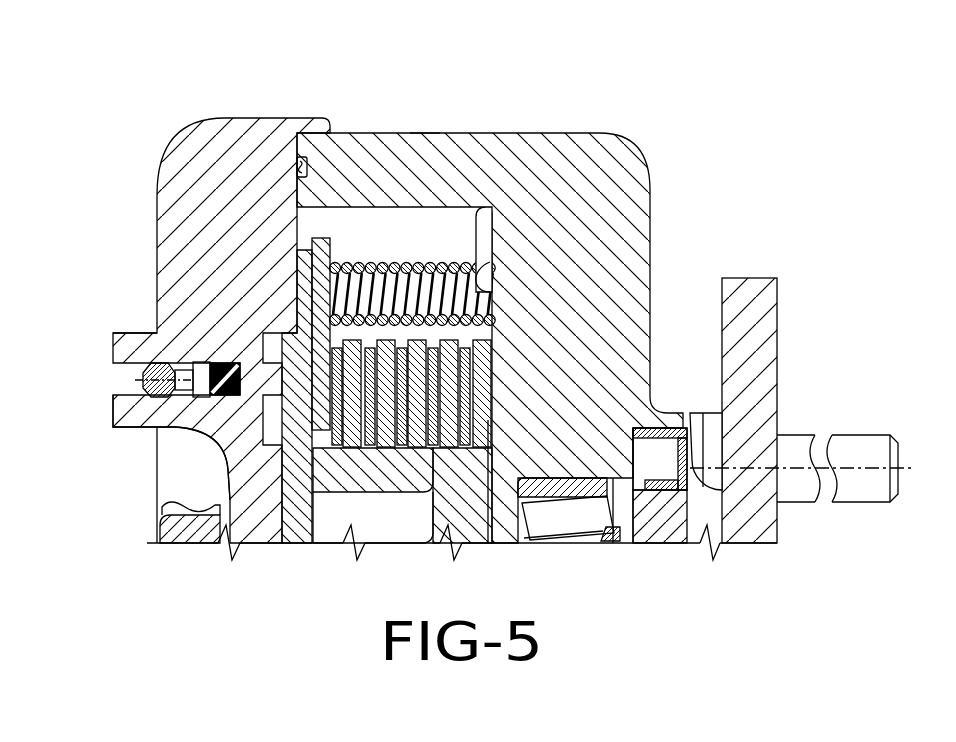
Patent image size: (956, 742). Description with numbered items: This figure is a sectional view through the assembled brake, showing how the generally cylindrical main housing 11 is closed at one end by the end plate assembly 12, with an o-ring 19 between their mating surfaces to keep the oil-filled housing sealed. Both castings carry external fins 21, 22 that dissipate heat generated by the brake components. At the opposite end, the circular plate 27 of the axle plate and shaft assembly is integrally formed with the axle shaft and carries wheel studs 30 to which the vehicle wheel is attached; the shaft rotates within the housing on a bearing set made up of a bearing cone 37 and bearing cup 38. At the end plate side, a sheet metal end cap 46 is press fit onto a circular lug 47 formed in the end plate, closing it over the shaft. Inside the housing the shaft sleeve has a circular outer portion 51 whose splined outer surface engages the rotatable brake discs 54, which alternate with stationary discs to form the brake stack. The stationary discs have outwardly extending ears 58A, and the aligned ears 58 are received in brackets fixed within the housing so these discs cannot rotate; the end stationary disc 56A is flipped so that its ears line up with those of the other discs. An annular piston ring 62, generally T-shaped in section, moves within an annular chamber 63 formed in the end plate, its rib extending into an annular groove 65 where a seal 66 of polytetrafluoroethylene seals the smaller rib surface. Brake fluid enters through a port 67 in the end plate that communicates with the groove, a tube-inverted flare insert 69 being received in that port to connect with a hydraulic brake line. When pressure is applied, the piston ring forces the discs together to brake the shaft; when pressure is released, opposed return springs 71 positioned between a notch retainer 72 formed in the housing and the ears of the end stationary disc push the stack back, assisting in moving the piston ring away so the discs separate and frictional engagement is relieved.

The main housing 11 is at (590, 128).
The end plate assembly 12 is at (184, 333).
The o-ring 19 is at (298, 162).
The fins 21 is at (425, 134).
The fins 22 is at (163, 160).
The circular plate 27 is at (762, 325).
The wheel studs 30 is at (862, 450).
The bearing cone 37 is at (612, 547).
The bearing cup 38 is at (543, 500).
The end cap 46 is at (170, 505).
The circular lug 47 is at (190, 533).
The circular outer portion 51 is at (347, 480).
The rotatable brake discs 54 is at (432, 393).
The end stationary disc 56A is at (221, 252).
The ears 58 is at (410, 425).
The ears 58A is at (330, 243).
The annular piston ring 62 is at (293, 432).
The annular chamber 63 is at (222, 427).
The annular groove 65 is at (177, 335).
The seal 66 is at (212, 363).
The port 67 is at (127, 413).
The tube-inverted flare insert 69 is at (142, 368).
The return springs 71 is at (433, 262).
The notch retainer 72 is at (482, 258).